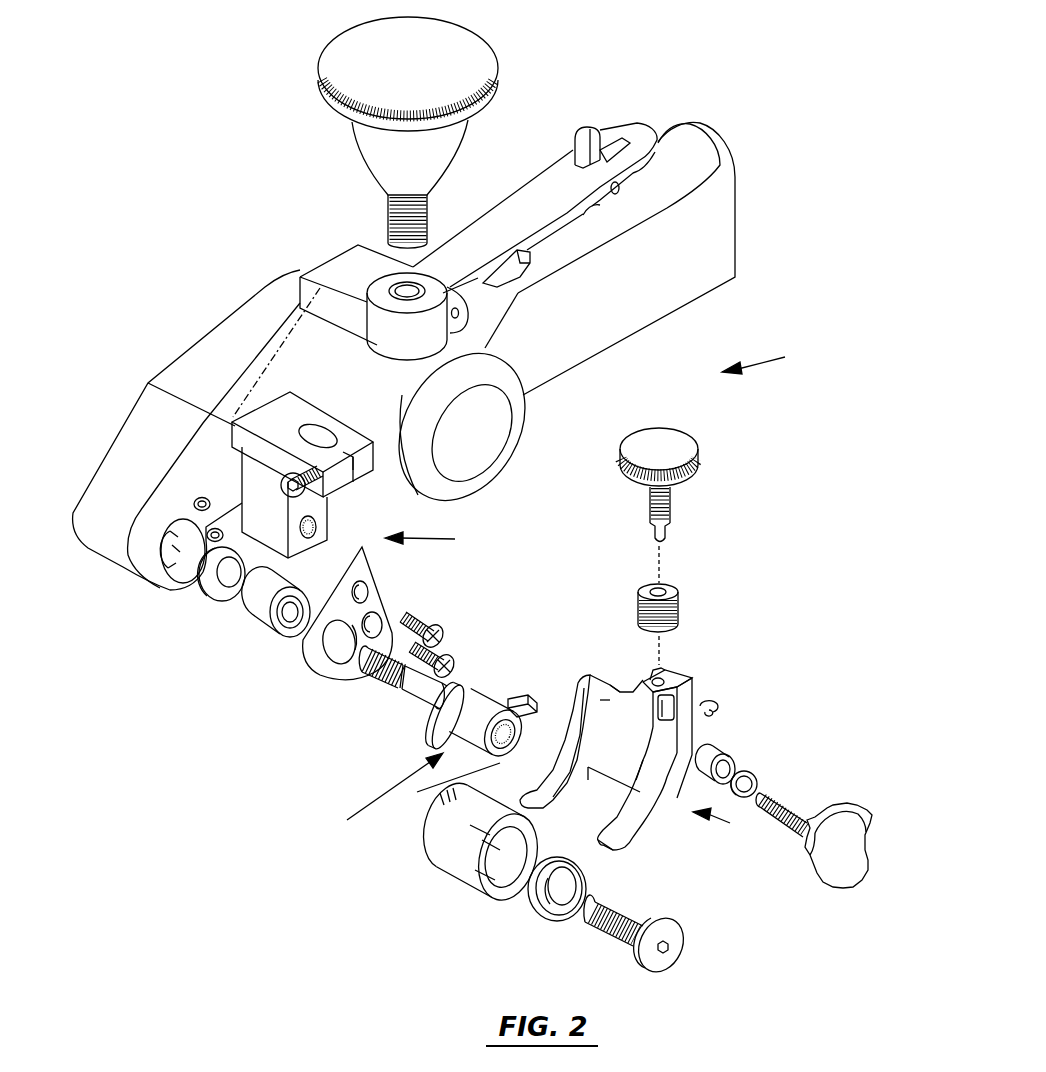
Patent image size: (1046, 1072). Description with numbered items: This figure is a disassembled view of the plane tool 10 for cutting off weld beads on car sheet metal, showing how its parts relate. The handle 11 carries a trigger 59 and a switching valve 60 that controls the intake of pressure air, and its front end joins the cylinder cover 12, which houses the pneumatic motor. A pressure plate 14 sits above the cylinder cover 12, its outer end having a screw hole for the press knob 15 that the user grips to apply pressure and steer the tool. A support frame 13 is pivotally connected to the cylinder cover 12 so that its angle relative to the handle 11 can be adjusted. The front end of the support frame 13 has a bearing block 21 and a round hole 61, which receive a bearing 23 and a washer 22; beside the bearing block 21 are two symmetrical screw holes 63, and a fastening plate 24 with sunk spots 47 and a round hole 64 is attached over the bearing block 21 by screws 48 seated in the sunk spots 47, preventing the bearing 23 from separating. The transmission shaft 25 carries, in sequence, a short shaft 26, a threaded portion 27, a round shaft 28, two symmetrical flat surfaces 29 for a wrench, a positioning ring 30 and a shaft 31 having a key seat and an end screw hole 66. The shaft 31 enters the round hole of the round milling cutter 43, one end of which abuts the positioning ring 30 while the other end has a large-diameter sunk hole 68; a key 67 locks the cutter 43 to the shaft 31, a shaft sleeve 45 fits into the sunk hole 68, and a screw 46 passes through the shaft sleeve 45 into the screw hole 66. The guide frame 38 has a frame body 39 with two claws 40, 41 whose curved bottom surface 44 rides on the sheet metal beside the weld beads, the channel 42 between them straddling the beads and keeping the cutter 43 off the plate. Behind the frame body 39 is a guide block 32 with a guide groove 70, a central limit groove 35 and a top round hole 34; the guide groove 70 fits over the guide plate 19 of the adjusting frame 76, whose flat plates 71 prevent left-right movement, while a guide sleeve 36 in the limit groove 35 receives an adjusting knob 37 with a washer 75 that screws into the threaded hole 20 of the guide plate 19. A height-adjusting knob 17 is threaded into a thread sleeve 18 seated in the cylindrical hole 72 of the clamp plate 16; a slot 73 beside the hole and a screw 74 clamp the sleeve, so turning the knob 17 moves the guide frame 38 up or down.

The plane tool 10 is at (768, 357).
The handle 11 is at (617, 325).
The cylinder cover 12 is at (478, 447).
The support frame 13 is at (253, 370).
The pressure plate 14 is at (353, 270).
The press knob 15 is at (480, 55).
The clamp plate 16 is at (290, 420).
The height-adjusting knob 17 is at (682, 452).
The thread sleeve 18 is at (687, 607).
The guide plate 19 is at (320, 507).
The threaded hole 20 is at (313, 530).
The bearing block 21 is at (168, 575).
The washer 22 is at (210, 587).
The bearing 23 is at (260, 622).
The fastening plate 24 is at (313, 663).
The transmission shaft 25 is at (377, 800).
The short shaft 26 is at (368, 663).
The threaded portion 27 is at (380, 680).
The round shaft 28 is at (422, 695).
The symmetrical flat surfaces 29 is at (450, 690).
The positioning ring 30 is at (443, 730).
The shaft 31 is at (482, 720).
The guide block 32 is at (685, 728).
The round hole 34 is at (692, 678).
The limit groove 35 is at (674, 705).
The guide sleeve 36 is at (727, 750).
The adjusting knob 37 is at (863, 835).
The guide frame 38 is at (725, 827).
The frame body 39 is at (610, 710).
The claw 40 is at (552, 777).
The claw 41 is at (633, 818).
The channel 42 is at (577, 798).
The round milling cutter 43 is at (458, 875).
The bottom surface 44 is at (627, 847).
The shaft sleeve 45 is at (542, 910).
The screw 46 is at (663, 927).
The sunk spots 47 is at (368, 592).
The screws 48 is at (437, 620).
The trigger 59 is at (540, 187).
The switching valve 60 is at (522, 256).
The round hole 61 is at (175, 547).
The screw holes 63 is at (210, 508).
The round hole 64 is at (356, 652).
The screw hole 66 is at (440, 792).
The key 67 is at (523, 697).
The sunk hole 68 is at (503, 877).
The guide groove 70 is at (633, 673).
The flat plates 71 is at (660, 668).
The cylindrical hole 72 is at (317, 437).
The slot 73 is at (343, 457).
The screw 74 is at (280, 488).
The washer 75 is at (757, 780).
The adjusting frame 76 is at (438, 532).